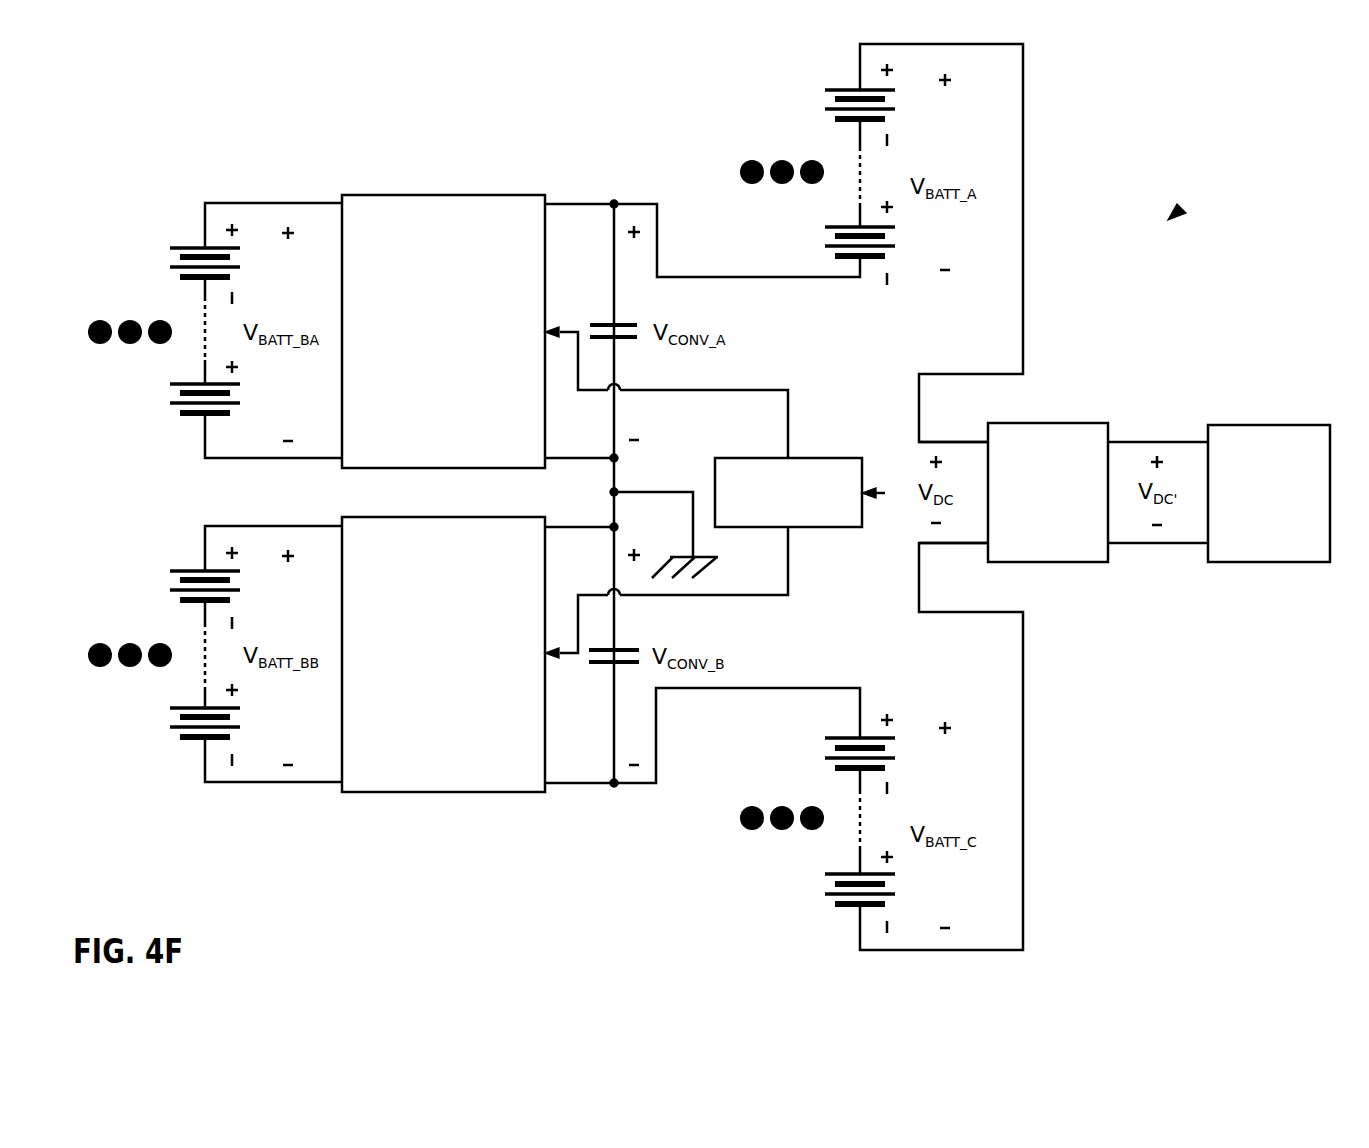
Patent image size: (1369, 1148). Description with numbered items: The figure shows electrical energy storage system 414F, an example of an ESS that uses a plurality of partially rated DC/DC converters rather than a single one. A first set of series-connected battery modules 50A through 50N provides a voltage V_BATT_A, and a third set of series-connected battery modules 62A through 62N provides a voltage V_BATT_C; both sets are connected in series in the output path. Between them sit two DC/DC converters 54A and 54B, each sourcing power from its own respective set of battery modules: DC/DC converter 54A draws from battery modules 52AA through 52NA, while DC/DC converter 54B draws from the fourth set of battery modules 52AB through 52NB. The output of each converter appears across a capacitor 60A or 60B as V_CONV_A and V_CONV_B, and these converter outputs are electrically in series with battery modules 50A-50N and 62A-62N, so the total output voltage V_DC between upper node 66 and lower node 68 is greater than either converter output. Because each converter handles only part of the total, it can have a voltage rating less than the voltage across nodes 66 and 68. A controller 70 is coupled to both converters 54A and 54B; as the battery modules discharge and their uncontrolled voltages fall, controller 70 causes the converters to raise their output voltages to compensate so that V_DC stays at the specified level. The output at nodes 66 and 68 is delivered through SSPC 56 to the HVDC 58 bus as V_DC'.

The battery module 52AA is at (172, 268).
The battery module 52NA is at (172, 404).
The battery module 52AB is at (172, 591).
The battery module 52NB is at (172, 728).
The battery module 50A is at (826, 108).
The battery module 50N is at (826, 246).
The battery module 62A is at (826, 757).
The battery module 62N is at (826, 893).
The DC/DC converter 54A is at (443, 331).
The DC/DC converter 54B is at (443, 654).
The controller 70 is at (788, 492).
The SSPC 56 is at (1048, 492).
The HVDC 58 is at (1269, 493).
The capacitor 60A is at (625, 322).
The capacitor 60B is at (628, 648).
The upper node 66 is at (980, 440).
The lower node 68 is at (980, 548).
The electrical energy storage system 414F is at (1172, 216).